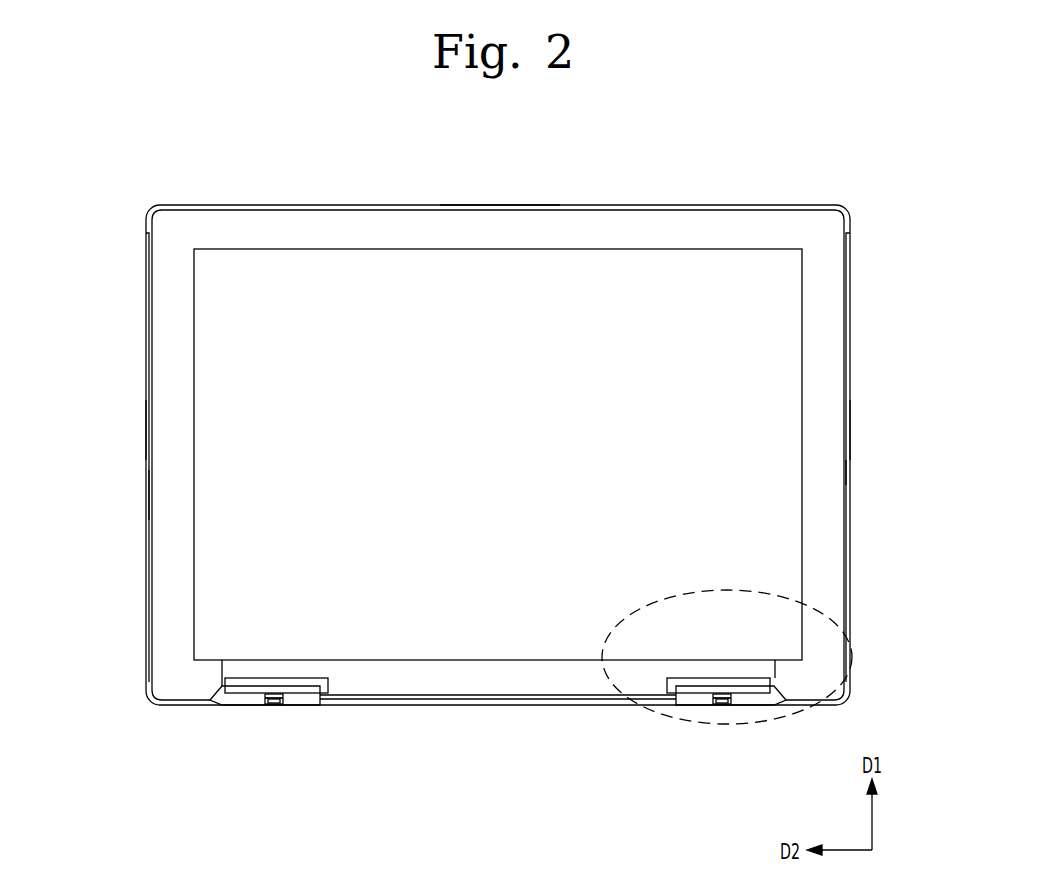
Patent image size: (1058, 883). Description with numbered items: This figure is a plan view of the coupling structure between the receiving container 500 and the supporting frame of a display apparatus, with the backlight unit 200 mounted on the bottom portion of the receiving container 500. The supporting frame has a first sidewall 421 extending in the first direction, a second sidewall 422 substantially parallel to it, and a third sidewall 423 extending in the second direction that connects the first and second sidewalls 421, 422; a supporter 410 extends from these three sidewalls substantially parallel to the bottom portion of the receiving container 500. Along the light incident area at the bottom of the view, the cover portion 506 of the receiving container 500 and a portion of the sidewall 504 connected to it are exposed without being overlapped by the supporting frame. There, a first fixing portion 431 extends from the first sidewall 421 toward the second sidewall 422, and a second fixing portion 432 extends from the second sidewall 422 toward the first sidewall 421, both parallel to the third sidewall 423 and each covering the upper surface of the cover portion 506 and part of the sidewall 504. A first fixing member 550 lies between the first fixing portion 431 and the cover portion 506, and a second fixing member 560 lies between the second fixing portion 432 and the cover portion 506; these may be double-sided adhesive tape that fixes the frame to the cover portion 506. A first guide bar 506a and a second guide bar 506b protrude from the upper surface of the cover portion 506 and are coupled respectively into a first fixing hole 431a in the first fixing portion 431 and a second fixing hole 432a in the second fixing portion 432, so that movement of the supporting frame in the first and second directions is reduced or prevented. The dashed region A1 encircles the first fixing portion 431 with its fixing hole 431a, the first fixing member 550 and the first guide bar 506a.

The receiving container 500 is at (730, 204).
The backlight unit 200 is at (777, 365).
The third sidewall 423 is at (485, 210).
The second sidewall 422 is at (153, 443).
The first sidewall 421 is at (842, 421).
The supporter 410 is at (165, 493).
The sidewall 504 is at (848, 472).
The cover portion 506 is at (497, 701).
The first guide bar 506a is at (720, 697).
The second guide bar 506b is at (273, 695).
The first fixing member 550 is at (692, 684).
The second fixing member 560 is at (315, 680).
The first fixing portion 431 is at (752, 706).
The first fixing hole 431a is at (722, 707).
The second fixing portion 432 is at (305, 707).
The second fixing hole 432a is at (273, 707).
The enlarged region A1 is at (808, 607).